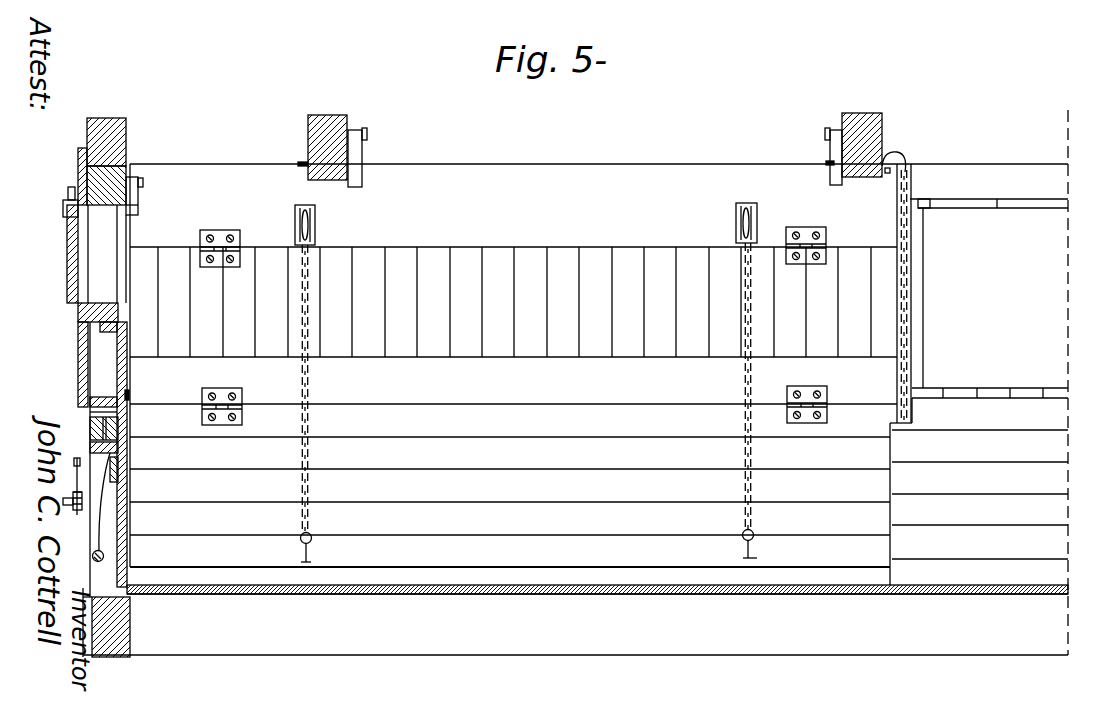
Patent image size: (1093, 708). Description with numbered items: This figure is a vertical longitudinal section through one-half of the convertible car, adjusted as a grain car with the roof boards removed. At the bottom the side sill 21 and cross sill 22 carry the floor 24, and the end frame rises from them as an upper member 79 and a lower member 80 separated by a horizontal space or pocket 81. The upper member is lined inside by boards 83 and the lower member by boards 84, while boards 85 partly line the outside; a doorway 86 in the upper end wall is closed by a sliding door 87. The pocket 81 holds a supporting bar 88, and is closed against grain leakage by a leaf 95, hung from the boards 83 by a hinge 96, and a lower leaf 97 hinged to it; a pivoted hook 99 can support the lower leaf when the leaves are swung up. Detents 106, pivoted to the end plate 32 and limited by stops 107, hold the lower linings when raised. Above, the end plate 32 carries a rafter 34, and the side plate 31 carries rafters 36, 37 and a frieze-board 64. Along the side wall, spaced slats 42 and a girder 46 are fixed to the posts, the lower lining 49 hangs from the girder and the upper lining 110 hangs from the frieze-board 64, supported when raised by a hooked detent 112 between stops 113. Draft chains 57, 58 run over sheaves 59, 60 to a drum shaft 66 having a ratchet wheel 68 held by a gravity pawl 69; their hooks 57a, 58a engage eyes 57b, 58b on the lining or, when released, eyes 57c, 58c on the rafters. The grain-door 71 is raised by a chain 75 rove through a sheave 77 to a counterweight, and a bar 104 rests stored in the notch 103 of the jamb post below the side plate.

The side sill 21 is at (575, 638).
The cross sill 22 is at (115, 630).
The floor 24 is at (360, 595).
The side plate 31 is at (989, 192).
The end plate 32 is at (112, 182).
The rafter 34 is at (112, 113).
The rafter 36 is at (322, 115).
The rafter 37 is at (852, 113).
The side slat or bar 42 is at (597, 580).
The girder 46 is at (513, 389).
The lower lining 49 is at (510, 502).
The chain 57 is at (301, 458).
The hook 57a is at (312, 536).
The eye 57b is at (311, 560).
The eye 57c is at (302, 163).
The chain 58 is at (745, 453).
The hook 58a is at (745, 531).
The eye 58b is at (745, 557).
The eye 58c is at (828, 163).
The sheave 59 is at (315, 219).
The sheave 60 is at (736, 220).
The frieze-board 64 is at (599, 205).
The drum shaft 66 is at (68, 508).
The ratchet wheel 68 is at (73, 494).
The gravity pawl 69 is at (75, 470).
The grain-door 71 is at (979, 491).
The chain 75 is at (910, 294).
The sheave 77 is at (903, 158).
The upper member of end frame 79 is at (90, 315).
The lower member of end frame 80 is at (92, 450).
The horizontal space or pocket 81 is at (92, 406).
The lining board 83 is at (124, 384).
The lining board 84 is at (128, 526).
The outer lining board 85 is at (80, 168).
The doorway 86 is at (107, 254).
The sliding door 87 is at (75, 257).
The supporting bar 88 is at (92, 432).
The leaf 95 is at (125, 413).
The hinge 96 is at (130, 396).
The leaf 97 is at (128, 463).
The hook 99 is at (95, 542).
The transverse notch 103 is at (942, 293).
The bar 104 is at (997, 209).
The detent 106 is at (140, 197).
The stop 107 is at (138, 206).
The upper lining 110 is at (513, 302).
The hooked detent 112 is at (368, 137).
The stop 113 is at (362, 160).